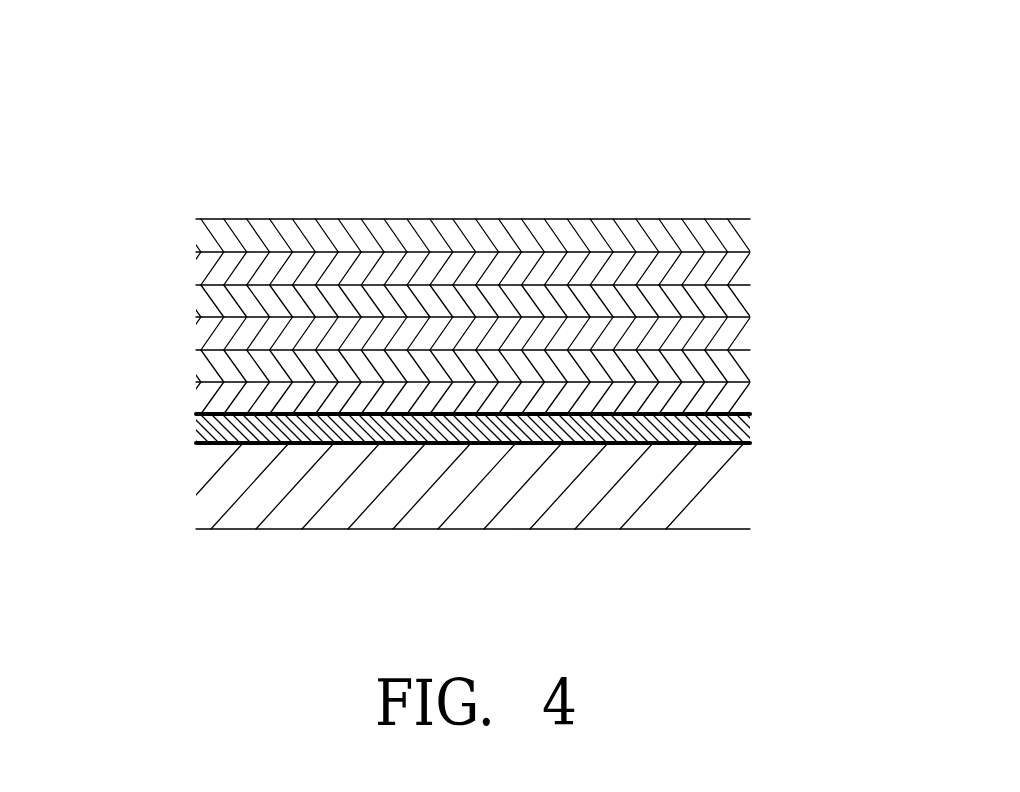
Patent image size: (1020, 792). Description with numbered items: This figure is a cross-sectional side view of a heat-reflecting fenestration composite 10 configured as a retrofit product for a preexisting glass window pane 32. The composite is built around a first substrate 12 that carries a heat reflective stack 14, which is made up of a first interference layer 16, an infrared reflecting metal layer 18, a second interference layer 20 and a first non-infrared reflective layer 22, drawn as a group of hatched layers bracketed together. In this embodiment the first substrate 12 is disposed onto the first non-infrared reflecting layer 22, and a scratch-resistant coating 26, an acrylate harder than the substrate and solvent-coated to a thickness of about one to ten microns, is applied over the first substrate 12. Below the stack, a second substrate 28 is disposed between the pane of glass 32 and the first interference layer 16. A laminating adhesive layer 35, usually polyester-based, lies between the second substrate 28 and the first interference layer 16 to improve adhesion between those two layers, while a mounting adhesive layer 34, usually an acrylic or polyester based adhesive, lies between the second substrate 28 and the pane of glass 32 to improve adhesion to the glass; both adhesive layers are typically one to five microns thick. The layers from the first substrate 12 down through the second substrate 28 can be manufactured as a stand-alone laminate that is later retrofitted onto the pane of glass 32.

The heat reflective composite 10 is at (509, 178).
The first substrate 12 is at (740, 268).
The heat reflective stack 14 is at (177, 285).
The first interference layer 16 is at (733, 398).
The infrared reflecting metal layer 18 is at (730, 356).
The second interference layer 20 is at (750, 333).
The first non-infrared reflective layer 22 is at (742, 302).
The scratch-resistant coating 26 is at (750, 237).
The second substrate 28 is at (730, 427).
The glass window pane 32 is at (730, 497).
The mounting adhesive layer 34 is at (508, 446).
The laminating adhesive layer 35 is at (320, 416).